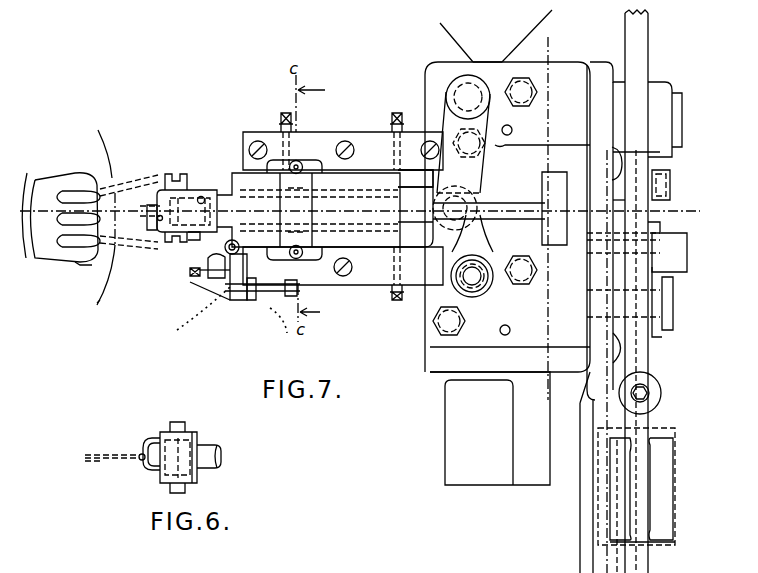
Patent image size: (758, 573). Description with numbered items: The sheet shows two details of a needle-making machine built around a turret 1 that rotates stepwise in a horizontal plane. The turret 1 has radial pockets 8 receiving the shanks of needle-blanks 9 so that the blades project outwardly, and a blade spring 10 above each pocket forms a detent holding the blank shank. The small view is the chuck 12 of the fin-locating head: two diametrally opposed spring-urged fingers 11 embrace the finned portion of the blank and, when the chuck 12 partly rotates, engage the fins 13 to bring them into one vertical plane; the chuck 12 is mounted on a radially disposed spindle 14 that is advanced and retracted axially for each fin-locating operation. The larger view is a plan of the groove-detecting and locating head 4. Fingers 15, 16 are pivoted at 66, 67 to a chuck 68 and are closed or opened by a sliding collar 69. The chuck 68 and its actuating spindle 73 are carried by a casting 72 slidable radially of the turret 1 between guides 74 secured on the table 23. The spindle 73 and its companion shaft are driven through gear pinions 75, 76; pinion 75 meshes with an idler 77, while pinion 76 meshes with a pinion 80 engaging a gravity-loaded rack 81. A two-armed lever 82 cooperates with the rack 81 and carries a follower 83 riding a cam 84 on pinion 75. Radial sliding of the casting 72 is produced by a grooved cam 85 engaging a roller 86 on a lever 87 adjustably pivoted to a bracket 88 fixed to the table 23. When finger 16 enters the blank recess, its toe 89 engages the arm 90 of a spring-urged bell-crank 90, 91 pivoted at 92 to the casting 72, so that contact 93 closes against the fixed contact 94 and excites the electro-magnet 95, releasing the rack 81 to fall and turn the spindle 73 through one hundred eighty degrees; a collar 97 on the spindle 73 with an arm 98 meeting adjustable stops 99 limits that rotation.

In FIG. 7, the turret 1 is at (95, 303).
In FIG. 7, the groove-detecting and locating head 4 is at (61, 217).
In FIG. 7, the radial pockets 8 is at (113, 263).
In FIG. 7, the needle-blanks 9 is at (115, 183).
In FIG. 6, the needle-blanks 9 is at (106, 453).
In FIG. 7, the blade spring 10 is at (87, 263).
In FIG. 6, the spring-urged fingers 11 is at (152, 438).
In FIG. 6, the chuck 12 is at (192, 479).
In FIG. 6, the fins 13 is at (142, 453).
In FIG. 6, the spindle 14 is at (217, 443).
In FIG. 7, the finger 15 is at (147, 208).
In FIG. 7, the finger 16 is at (143, 218).
In FIG. 7, the table 23 is at (545, 395).
In FIG. 7, the pivot 66 is at (204, 199).
In FIG. 7, the pivot 67 is at (160, 232).
In FIG. 7, the chuck 68 is at (195, 193).
In FIG. 7, the sliding collar 69 is at (181, 188).
In FIG. 7, the casting 72 is at (397, 237).
In FIG. 7, the spindle 73 is at (538, 206).
In FIG. 7, the guides 74 is at (360, 141).
In FIG. 7, the gear pinion 75 is at (642, 164).
In FIG. 7, the gear pinion 76 is at (617, 203).
In FIG. 7, the idler 77 is at (643, 27).
In FIG. 7, the pinion 80 is at (652, 345).
In FIG. 7, the rack 81 is at (650, 400).
In FIG. 7, the two-armed lever 82 is at (673, 272).
In FIG. 7, the follower 83 is at (660, 226).
In FIG. 7, the cam 84 is at (662, 177).
In FIG. 7, the grooved cam 85 is at (478, 233).
In FIG. 7, the roller 86 is at (433, 198).
In FIG. 7, the lever 87 is at (480, 150).
In FIG. 7, the bracket 88 is at (558, 72).
In FIG. 7, the toe 89 is at (193, 240).
In FIG. 7, the arm of bell-crank 90 is at (210, 245).
In FIG. 7, the arm of bell-crank 91 is at (240, 264).
In FIG. 7, the pivot 92 is at (241, 240).
In FIG. 7, the contact 93 is at (226, 290).
In FIG. 7, the fixed contact 94 is at (237, 298).
In FIG. 7, the electro-magnet 95 is at (657, 430).
In FIG. 7, the collar 97 is at (310, 212).
In FIG. 7, the arm 98 is at (331, 267).
In FIG. 7, the adjustable stops 99 is at (298, 165).